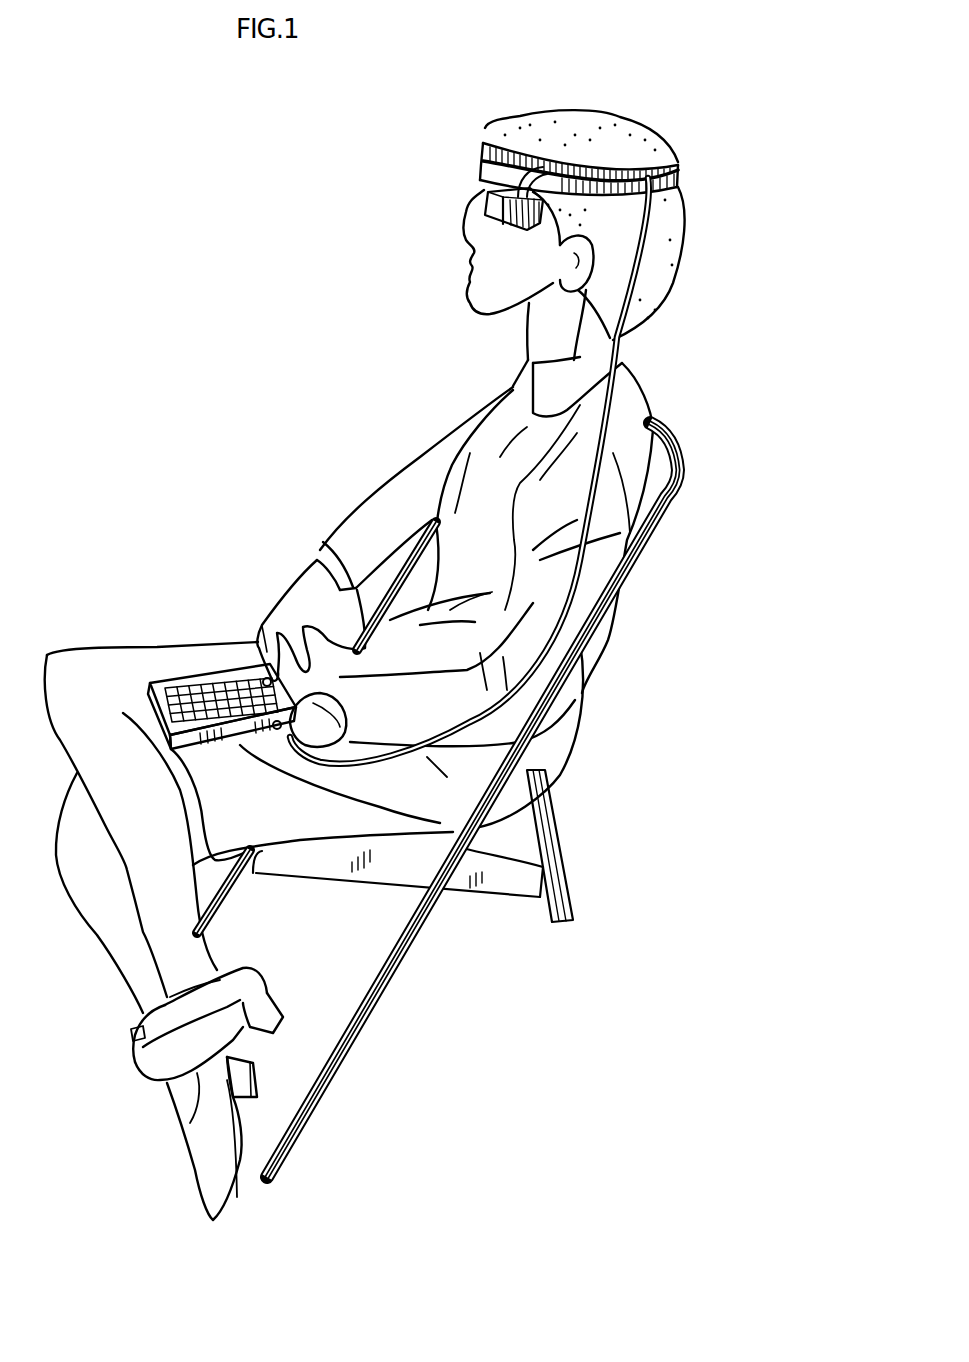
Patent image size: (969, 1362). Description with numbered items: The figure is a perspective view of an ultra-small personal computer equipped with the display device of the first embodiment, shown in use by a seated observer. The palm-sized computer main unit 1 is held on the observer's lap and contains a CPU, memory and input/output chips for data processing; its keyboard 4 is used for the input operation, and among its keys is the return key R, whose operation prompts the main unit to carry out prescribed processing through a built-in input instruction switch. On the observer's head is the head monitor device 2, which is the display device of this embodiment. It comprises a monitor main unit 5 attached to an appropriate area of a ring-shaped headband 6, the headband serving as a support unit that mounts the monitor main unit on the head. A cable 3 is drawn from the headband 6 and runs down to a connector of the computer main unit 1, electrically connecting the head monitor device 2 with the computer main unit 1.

The main unit of the ultra-small personal computer 1 is at (222, 637).
The head monitor device 2 is at (462, 160).
The cable 3 is at (610, 423).
The keyboard 4 is at (220, 677).
The monitor main unit 5 is at (482, 205).
The ring-shaped headband 6 is at (677, 177).
The return key R is at (332, 748).